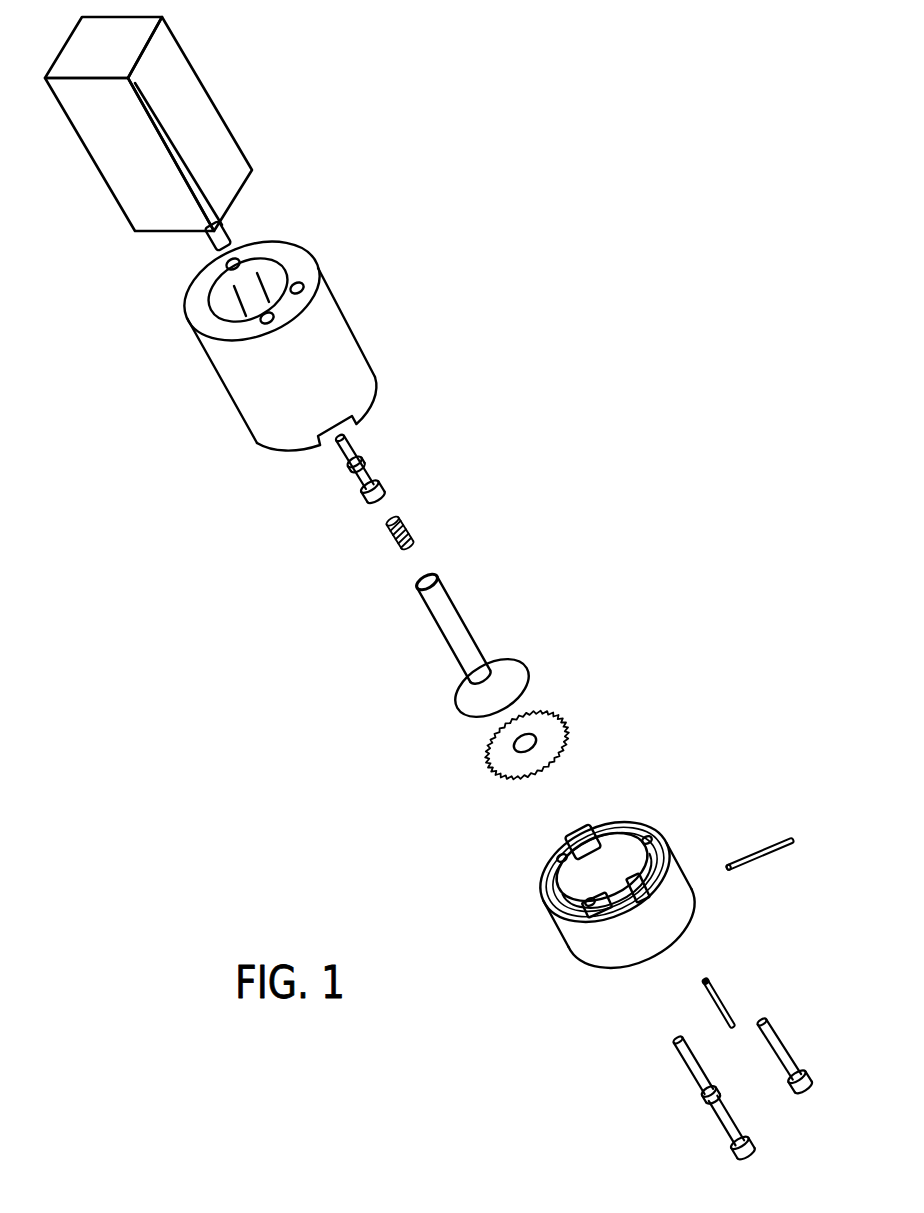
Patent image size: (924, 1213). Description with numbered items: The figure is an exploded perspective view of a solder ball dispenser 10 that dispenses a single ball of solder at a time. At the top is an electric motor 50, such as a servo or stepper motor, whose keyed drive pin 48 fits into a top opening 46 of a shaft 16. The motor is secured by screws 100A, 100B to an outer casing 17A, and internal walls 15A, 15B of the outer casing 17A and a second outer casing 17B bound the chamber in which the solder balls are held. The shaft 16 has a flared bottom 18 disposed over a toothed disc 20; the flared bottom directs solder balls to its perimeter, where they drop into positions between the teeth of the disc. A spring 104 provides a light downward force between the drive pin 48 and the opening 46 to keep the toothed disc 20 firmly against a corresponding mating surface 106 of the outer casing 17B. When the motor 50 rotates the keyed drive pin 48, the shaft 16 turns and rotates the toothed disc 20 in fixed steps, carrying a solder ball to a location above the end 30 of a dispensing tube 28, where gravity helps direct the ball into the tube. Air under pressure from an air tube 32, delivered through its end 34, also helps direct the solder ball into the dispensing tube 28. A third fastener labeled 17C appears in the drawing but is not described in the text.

The solder ball dispenser 10 is at (236, 509).
The electric motor 50 is at (206, 82).
The keyed drive pin 48 is at (228, 228).
The outer casing 17A is at (292, 337).
The internal wall 15A is at (273, 284).
The screw 100A is at (355, 441).
The screw 100B is at (378, 479).
The spring 104 is at (386, 535).
The shaft 16 is at (466, 640).
The top opening 46 is at (438, 575).
The flared bottom 18 is at (516, 668).
The toothed disc 20 is at (563, 717).
The outer casing 17B is at (591, 874).
The internal wall 15B is at (618, 847).
The mating surface 106 is at (597, 887).
The air tube 32 is at (797, 838).
The end of air tube 34 is at (733, 863).
The dispensing tube 28 is at (725, 999).
The end of dispensing tube 30 is at (707, 980).
The fastener pin 17C is at (782, 1041).